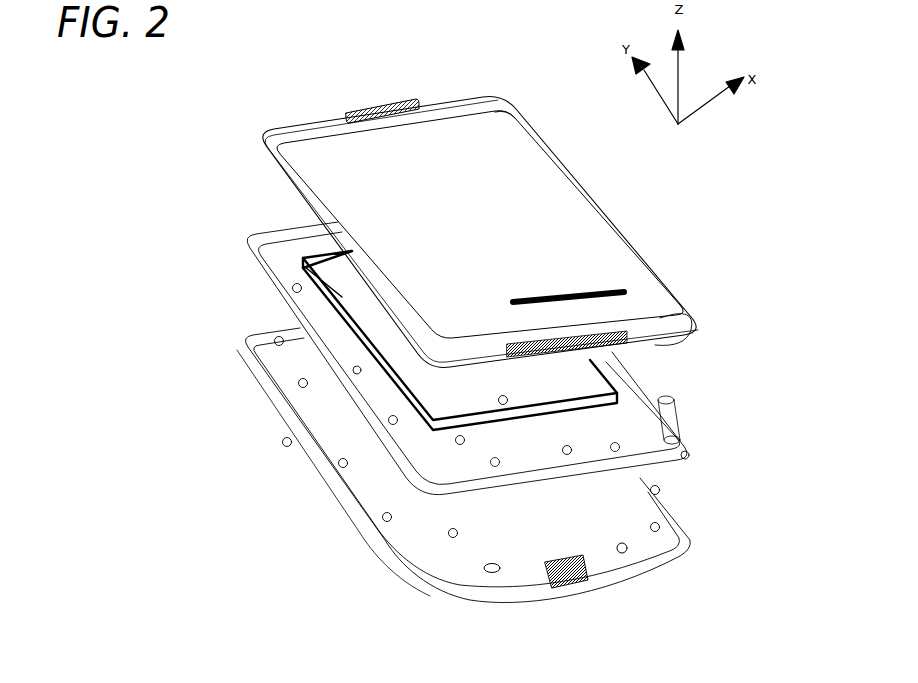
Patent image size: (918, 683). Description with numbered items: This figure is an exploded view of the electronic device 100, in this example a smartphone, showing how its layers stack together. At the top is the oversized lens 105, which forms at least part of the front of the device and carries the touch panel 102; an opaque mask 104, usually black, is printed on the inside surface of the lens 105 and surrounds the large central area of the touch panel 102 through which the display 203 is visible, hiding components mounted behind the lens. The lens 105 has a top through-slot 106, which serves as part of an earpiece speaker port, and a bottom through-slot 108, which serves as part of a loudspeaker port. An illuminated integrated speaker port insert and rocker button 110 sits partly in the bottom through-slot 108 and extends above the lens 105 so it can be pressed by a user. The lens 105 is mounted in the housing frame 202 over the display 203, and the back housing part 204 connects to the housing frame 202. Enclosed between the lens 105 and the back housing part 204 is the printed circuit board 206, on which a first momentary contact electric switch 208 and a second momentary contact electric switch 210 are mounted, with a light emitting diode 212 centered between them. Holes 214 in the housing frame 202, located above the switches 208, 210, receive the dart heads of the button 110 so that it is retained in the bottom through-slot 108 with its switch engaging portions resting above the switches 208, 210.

The electronic device 100 is at (385, 4).
The touch panel 102 is at (495, 229).
The opaque mask 104 is at (268, 132).
The lens 105 is at (476, 104).
The top through-slot 106 is at (372, 114).
The bottom through-slot 108 is at (607, 337).
The illuminated integrated speaker port insert and rocker button 110 is at (626, 290).
The housing frame 202 is at (257, 240).
The display 203 is at (300, 262).
The back housing part 204 is at (243, 360).
The printed circuit board 206 is at (315, 417).
The first momentary contact electric switch 208 is at (497, 565).
The second momentary contact electric switch 210 is at (622, 548).
The light emitting diode 212 is at (573, 553).
The holes 214 is at (507, 462).